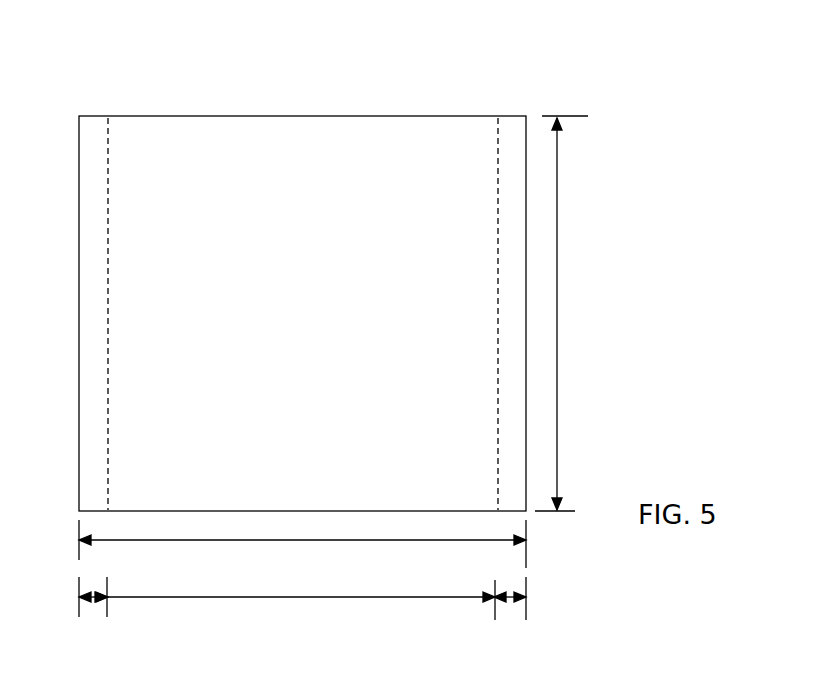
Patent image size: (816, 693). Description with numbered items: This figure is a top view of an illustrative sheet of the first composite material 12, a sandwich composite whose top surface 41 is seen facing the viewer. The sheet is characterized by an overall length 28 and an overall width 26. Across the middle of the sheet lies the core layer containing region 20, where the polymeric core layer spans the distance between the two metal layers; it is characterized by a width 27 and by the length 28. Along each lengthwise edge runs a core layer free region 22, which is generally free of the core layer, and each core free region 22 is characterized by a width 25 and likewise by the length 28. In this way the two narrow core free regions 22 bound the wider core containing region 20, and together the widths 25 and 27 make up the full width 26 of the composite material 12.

The first composite material 12 is at (398, 44).
The core layer containing region 20 is at (268, 155).
The core layer free region 22 is at (92, 138).
The top surface 41 is at (213, 192).
The length 28 is at (558, 363).
The width 26 is at (285, 541).
The width of core containing region 27 is at (222, 598).
The width of core free region 25 is at (92, 602).